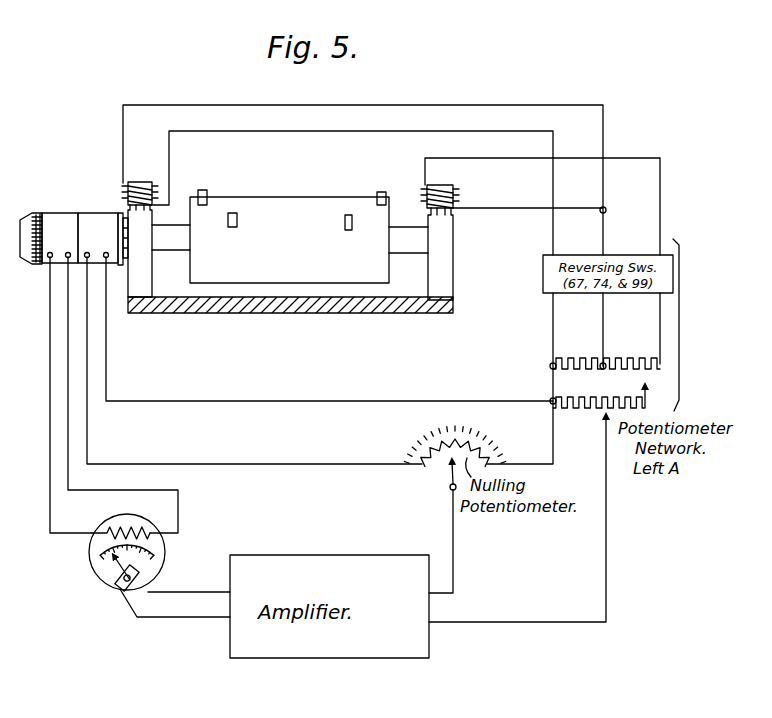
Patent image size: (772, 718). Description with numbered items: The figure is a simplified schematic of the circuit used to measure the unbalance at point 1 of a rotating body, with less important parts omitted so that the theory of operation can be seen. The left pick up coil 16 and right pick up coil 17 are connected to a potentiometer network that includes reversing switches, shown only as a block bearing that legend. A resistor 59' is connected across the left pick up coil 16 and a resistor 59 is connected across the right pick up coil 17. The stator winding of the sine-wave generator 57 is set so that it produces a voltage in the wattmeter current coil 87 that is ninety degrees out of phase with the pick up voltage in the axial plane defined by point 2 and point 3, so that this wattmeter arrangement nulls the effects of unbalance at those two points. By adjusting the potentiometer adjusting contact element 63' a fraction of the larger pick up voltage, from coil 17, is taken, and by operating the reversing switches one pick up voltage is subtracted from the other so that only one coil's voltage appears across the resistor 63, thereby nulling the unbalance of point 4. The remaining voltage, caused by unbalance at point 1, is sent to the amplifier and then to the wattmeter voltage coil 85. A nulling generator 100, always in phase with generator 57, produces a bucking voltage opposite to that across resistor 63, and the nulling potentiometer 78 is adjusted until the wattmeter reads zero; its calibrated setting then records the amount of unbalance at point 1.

The unbalance point 1 is at (207, 192).
The unbalance point 2 is at (238, 219).
The unbalance point 3 is at (343, 219).
The unbalance point 4 is at (383, 192).
The left pick up coil 16 is at (138, 186).
The right pick up coil 17 is at (441, 190).
The sine-wave generator 57 is at (58, 220).
The nulling generator 100 is at (95, 220).
The resistor 59 is at (632, 354).
The resistor 59' is at (578, 354).
The potentiometer resistor 63 is at (577, 395).
The potentiometer adjusting contact element 63' is at (623, 395).
The nulling potentiometer 78 is at (445, 456).
The voltage coil of the wattmeter 85 is at (118, 588).
The current coil of the wattmeter 87 is at (145, 527).